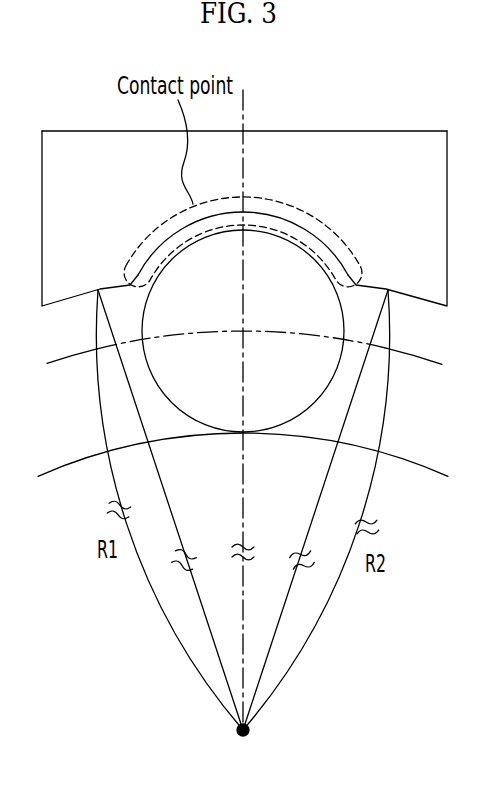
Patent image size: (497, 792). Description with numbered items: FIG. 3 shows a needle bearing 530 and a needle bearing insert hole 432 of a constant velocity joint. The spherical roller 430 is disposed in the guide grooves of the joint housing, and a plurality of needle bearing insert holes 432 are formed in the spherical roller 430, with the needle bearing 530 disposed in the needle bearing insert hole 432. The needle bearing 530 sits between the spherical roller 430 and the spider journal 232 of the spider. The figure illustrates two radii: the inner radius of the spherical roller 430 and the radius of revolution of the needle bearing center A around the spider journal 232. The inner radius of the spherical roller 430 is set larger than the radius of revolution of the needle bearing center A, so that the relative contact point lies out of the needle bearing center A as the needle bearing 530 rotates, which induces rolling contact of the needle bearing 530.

The spherical roller 430 is at (400, 136).
The needle bearing insert hole 432 is at (293, 221).
The needle bearing 530 is at (185, 278).
The spider journal 232 is at (398, 468).
The needle bearing center A is at (250, 327).